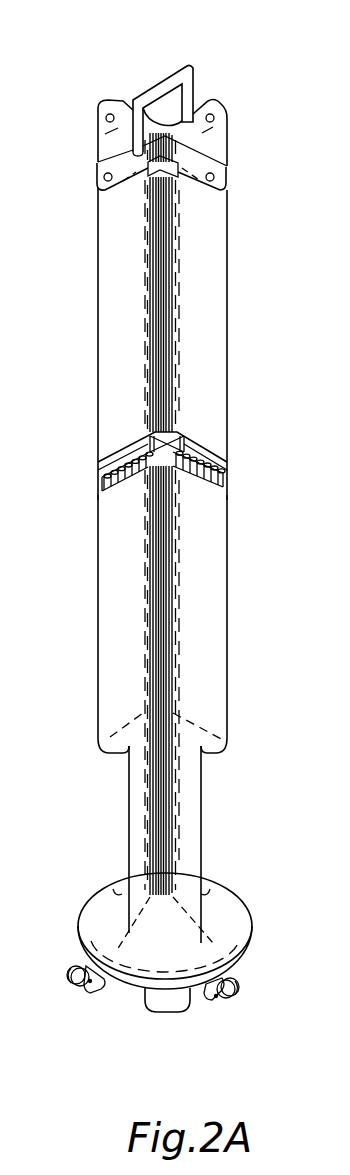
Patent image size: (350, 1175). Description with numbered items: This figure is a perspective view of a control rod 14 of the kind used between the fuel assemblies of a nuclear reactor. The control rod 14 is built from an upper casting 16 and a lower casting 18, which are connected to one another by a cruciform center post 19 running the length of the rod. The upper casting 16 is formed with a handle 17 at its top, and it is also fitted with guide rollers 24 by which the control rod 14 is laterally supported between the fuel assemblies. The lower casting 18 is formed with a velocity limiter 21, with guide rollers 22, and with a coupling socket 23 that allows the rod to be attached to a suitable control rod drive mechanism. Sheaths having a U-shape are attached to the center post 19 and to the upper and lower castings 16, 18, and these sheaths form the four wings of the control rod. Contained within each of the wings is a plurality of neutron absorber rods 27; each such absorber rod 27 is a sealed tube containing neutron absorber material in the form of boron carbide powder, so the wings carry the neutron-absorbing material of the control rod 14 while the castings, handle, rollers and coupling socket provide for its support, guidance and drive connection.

The control rod 14 is at (258, 345).
The upper casting 16 is at (107, 158).
The handle 17 is at (170, 70).
The lower casting 18 is at (127, 832).
The cruciform center post 19 is at (160, 460).
The velocity limiter 21 is at (255, 917).
The guide rollers 22 is at (230, 1002).
The coupling socket 23 is at (167, 1012).
The guide rollers 24 is at (217, 119).
The neutron absorber rods 27 is at (227, 482).